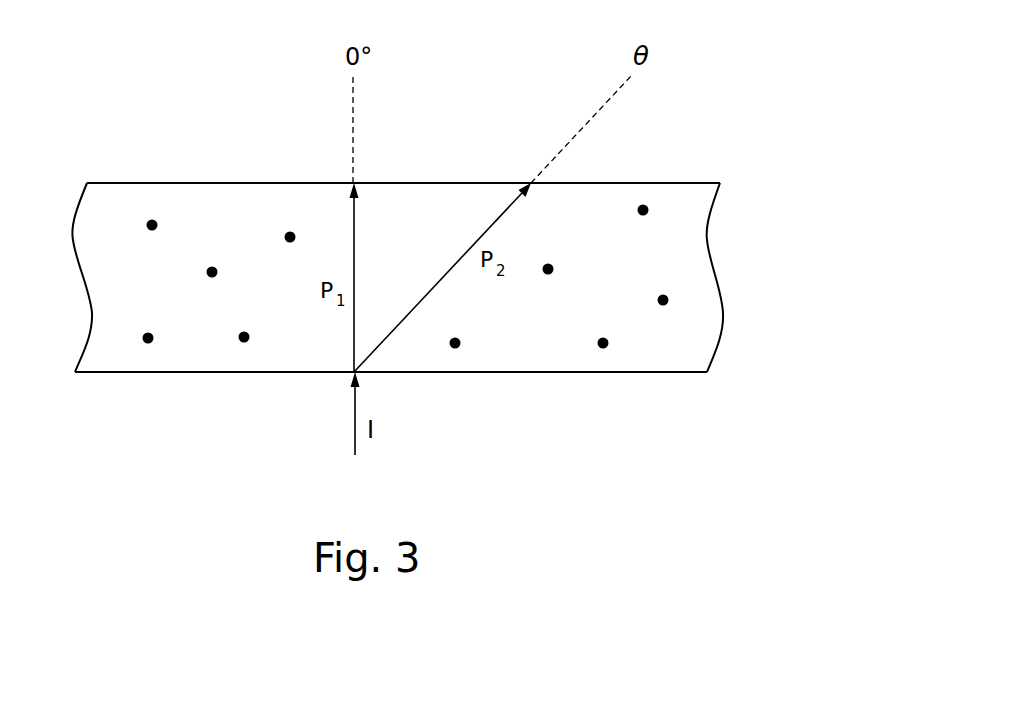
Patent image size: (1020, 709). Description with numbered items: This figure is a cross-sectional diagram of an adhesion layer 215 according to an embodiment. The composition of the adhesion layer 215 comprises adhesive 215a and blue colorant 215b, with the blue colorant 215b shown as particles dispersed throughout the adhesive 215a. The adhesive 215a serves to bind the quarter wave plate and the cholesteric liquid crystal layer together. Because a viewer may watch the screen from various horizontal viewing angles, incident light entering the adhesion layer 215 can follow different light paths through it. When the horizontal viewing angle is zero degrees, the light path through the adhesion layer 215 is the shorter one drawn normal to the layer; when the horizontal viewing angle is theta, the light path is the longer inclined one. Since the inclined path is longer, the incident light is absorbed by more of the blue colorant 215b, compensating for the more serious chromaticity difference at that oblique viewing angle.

The adhesion layer 215 is at (125, 417).
The adhesive 215a is at (702, 282).
The blue colorant 215b is at (603, 343).